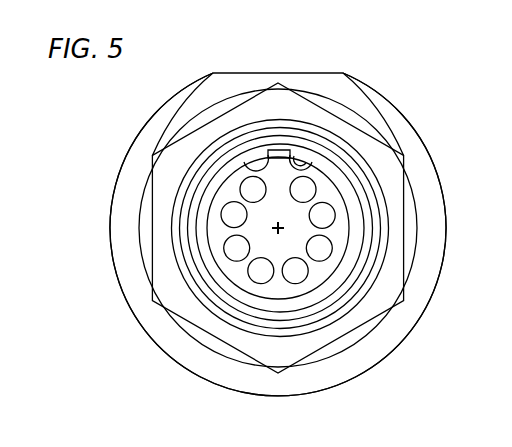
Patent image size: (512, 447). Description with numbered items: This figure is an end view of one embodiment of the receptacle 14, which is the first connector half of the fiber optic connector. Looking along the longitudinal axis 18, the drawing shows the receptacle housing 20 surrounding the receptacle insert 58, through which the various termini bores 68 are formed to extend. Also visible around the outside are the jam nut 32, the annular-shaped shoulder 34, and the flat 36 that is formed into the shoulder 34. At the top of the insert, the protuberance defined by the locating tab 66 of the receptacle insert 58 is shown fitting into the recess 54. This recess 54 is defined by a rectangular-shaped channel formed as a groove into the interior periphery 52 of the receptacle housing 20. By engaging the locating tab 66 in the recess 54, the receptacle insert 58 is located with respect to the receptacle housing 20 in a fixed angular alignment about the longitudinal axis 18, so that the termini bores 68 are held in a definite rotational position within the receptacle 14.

The receptacle 14 is at (430, 137).
The longitudinal axis 18 is at (276, 226).
The receptacle housing 20 is at (400, 226).
The jam nut 32 is at (155, 156).
The annular-shaped shoulder 34 is at (442, 241).
The flat 36 is at (332, 73).
The interior periphery 52 is at (310, 167).
The recess 54 is at (252, 153).
The receptacle insert 58 is at (259, 290).
The locating tab 66 is at (281, 150).
The termini bores 68 is at (234, 250).